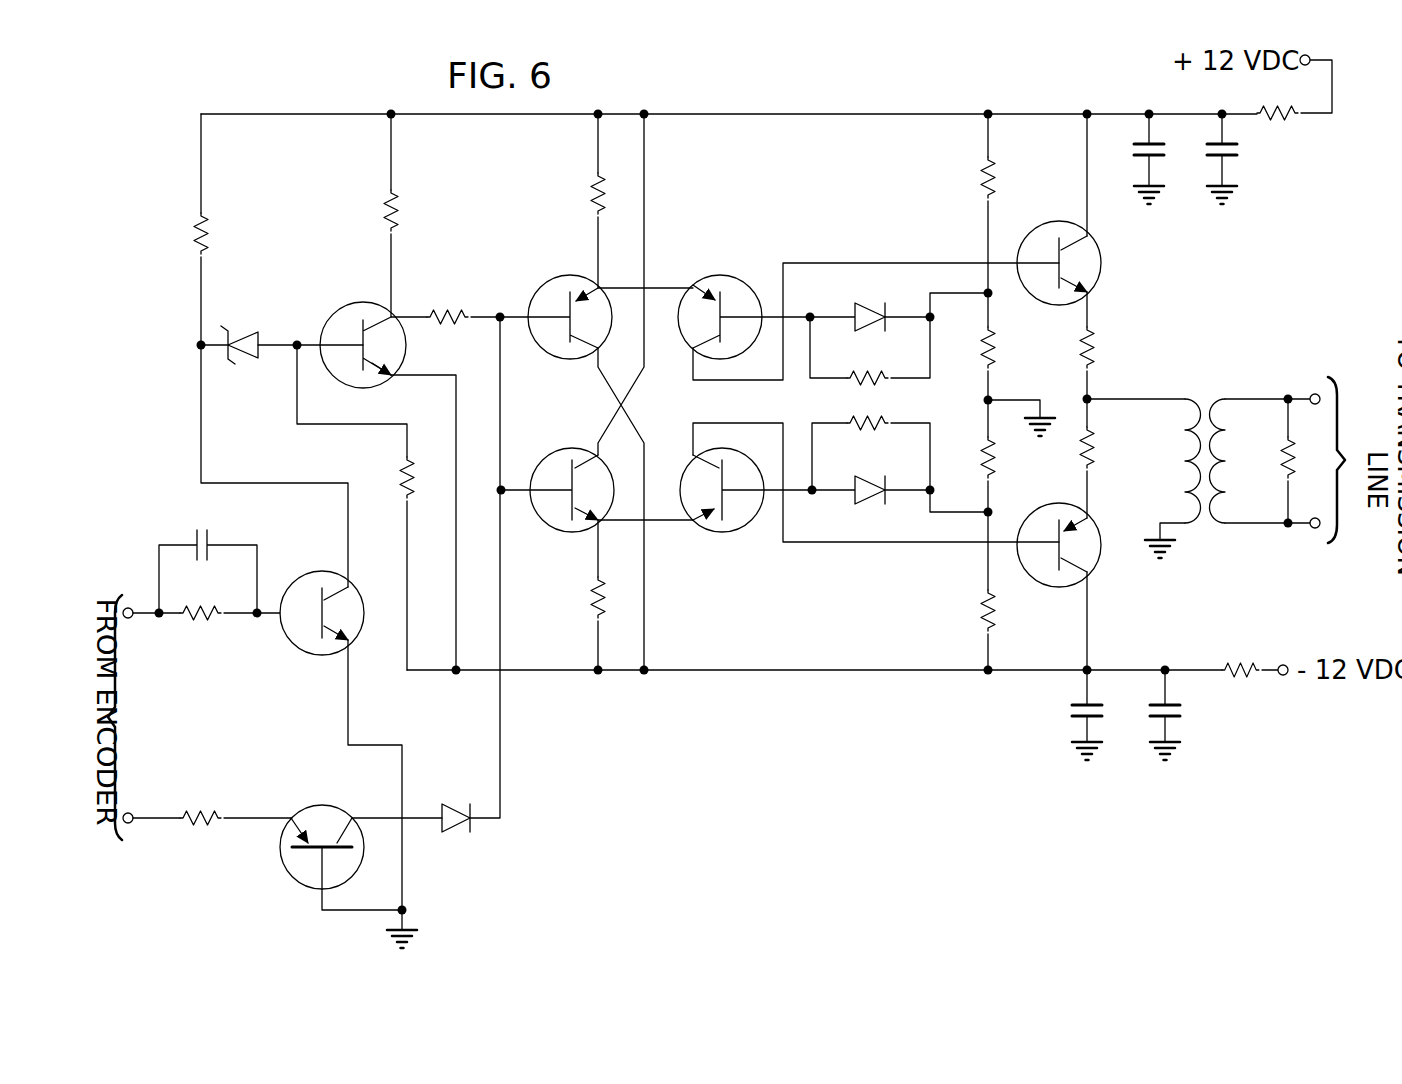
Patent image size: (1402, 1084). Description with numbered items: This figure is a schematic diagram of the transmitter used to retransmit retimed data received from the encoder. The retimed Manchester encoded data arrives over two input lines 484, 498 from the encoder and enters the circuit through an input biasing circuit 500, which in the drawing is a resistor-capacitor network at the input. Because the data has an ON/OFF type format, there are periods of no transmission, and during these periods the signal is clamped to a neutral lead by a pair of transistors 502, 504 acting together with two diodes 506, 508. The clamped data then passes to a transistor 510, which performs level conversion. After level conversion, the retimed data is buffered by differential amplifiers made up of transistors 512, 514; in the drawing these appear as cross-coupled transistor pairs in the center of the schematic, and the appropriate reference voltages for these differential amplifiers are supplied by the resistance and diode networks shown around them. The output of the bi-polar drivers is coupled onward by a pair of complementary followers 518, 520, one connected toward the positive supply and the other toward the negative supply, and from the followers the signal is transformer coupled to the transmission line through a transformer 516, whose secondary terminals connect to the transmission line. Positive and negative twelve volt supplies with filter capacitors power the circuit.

The line 484 is at (148, 620).
The line 498 is at (165, 828).
The input biasing circuit 500 is at (175, 556).
The transistor 502 is at (292, 636).
The transistor 504 is at (324, 806).
The diode 506 is at (247, 333).
The diode 508 is at (480, 765).
The transistor 510 is at (358, 303).
The transistor 512 is at (598, 528).
The transistor 514 is at (700, 275).
The transformer 516 is at (1213, 505).
The complementary follower 518 is at (1102, 260).
The complementary follower 520 is at (1100, 573).